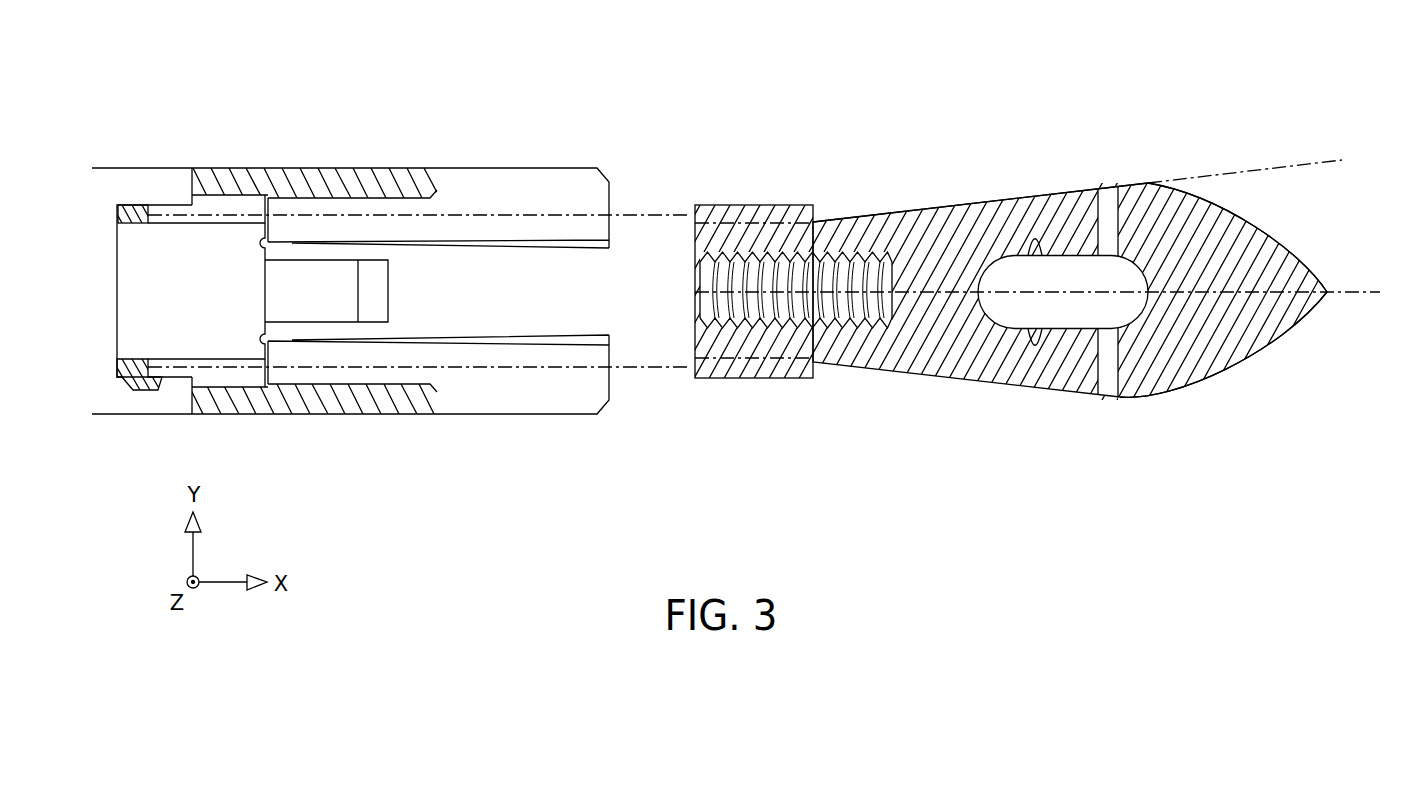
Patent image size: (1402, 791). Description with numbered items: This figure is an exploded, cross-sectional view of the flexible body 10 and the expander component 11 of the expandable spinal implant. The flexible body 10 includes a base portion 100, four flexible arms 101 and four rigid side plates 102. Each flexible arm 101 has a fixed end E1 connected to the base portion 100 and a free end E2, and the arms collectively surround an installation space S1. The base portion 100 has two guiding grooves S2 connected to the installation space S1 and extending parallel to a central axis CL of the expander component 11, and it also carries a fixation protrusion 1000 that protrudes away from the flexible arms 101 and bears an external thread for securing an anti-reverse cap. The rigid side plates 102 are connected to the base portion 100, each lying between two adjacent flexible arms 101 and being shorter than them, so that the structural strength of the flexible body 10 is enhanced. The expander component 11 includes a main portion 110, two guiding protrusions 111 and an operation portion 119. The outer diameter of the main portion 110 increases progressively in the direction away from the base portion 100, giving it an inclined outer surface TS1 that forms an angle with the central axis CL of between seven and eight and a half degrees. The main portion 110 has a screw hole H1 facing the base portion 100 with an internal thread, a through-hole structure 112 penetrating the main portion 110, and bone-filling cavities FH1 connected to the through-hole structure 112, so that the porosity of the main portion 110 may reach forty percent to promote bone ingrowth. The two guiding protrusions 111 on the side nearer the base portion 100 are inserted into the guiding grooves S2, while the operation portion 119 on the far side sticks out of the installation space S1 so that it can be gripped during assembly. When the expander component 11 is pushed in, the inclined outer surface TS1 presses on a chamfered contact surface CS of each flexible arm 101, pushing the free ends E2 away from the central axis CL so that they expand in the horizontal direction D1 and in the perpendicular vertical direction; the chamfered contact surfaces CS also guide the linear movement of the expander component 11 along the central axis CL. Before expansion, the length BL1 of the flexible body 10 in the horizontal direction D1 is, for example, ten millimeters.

The flexible body 10 is at (505, 106).
The base portion 100 is at (223, 168).
The flexible arms 101 is at (483, 183).
The rigid side plates 102 is at (340, 278).
The fixation protrusion 1000 is at (133, 372).
The expander component 11 is at (760, 445).
The main portion 110 is at (930, 353).
The guiding protrusions 111 is at (780, 380).
The through-hole structure 112 is at (1054, 272).
The operation portion 119 is at (1233, 347).
The installation space S1 is at (608, 262).
The guiding grooves S2 is at (246, 210).
The chamfered contact surface CS is at (566, 331).
The screw hole H1 is at (686, 306).
The fixed end E1 is at (278, 380).
The free end E2 is at (590, 380).
The inclined outer surface TS1 is at (979, 194).
The bone-filling cavities FH1 is at (1109, 184).
The horizontal direction D1 is at (68, 120).
The length of the flexible body BL1 is at (98, 172).
The central axis CL is at (1363, 294).